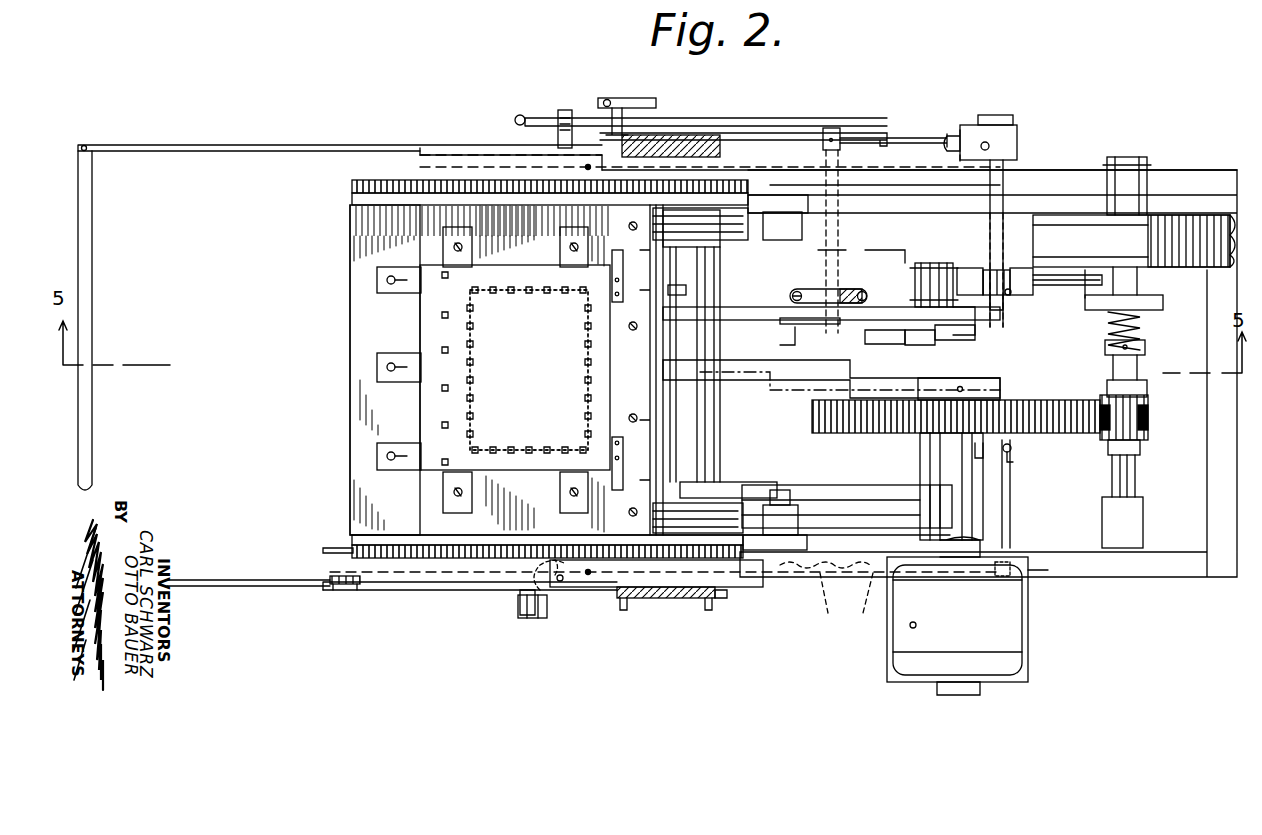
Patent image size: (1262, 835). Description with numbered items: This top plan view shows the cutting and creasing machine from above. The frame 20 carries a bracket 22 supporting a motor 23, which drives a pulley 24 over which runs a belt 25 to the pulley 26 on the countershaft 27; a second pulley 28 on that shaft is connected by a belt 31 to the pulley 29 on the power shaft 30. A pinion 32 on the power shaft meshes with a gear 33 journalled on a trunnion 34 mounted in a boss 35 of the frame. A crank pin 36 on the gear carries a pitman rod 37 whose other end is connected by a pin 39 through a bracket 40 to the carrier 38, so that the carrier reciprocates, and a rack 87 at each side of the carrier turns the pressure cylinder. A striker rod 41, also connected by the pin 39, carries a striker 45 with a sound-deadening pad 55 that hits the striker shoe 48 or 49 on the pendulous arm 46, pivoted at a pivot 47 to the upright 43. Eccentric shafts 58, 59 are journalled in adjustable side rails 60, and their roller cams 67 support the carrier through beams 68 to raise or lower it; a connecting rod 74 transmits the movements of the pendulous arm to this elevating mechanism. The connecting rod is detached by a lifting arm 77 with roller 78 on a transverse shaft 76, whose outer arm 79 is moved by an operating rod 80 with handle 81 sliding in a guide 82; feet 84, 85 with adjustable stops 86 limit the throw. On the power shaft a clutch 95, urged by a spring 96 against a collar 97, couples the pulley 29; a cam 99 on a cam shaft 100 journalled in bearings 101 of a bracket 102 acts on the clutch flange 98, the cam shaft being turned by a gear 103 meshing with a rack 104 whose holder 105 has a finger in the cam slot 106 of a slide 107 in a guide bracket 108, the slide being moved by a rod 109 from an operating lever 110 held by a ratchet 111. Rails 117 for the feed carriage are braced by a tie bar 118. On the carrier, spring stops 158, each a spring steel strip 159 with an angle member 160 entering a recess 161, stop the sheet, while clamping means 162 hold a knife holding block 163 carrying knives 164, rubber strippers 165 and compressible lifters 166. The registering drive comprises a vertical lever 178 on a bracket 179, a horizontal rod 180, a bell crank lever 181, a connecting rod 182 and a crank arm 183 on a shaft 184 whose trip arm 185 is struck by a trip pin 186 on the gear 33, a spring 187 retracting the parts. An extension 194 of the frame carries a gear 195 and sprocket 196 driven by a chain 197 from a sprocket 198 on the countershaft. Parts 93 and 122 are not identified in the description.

The frame 20 is at (1213, 574).
The bracket 22 is at (1040, 575).
The motor 23 is at (1010, 635).
The pulley 24 is at (945, 483).
The belt 25 is at (852, 490).
The pulley 26 is at (733, 484).
The countershaft 27 is at (712, 430).
The second pulley 28 is at (704, 244).
The pulley 29 is at (1170, 215).
The power shaft 30 is at (1135, 480).
The belt 31 is at (1190, 230).
The pinion 32 is at (1148, 418).
The gear 33 is at (1050, 402).
The trunnion or stub shaft 34 is at (990, 380).
The boss 35 is at (990, 530).
The crank pin 36 is at (871, 341).
The pitman rod 37 is at (782, 347).
The chase, table, member or carrier 38 is at (350, 258).
The pin 39 is at (686, 293).
The bracket 40 is at (652, 351).
The striker rod 41 is at (747, 320).
The upright or standard 43 is at (906, 263).
The striker 45 is at (976, 335).
The pendulous arm 46 is at (966, 279).
The pivot 47 is at (915, 277).
The striker shoe 48 is at (909, 346).
The striker shoe 49 is at (957, 340).
The pads 55 is at (665, 350).
The eccentric shaft 58 is at (670, 458).
The eccentric shaft 59 is at (785, 490).
The side rails 60 is at (783, 203).
The cams 67 is at (800, 228).
The beams 68 is at (658, 216).
The connecting rod 74 is at (740, 330).
The shaft 76 is at (838, 157).
The lifting arm 77 is at (782, 323).
The roller 78 is at (786, 350).
The arm 79 is at (852, 133).
The operating rod 80 is at (760, 118).
The handle 81 is at (515, 118).
The guide 82 is at (568, 110).
The foot 84 is at (803, 289).
The foot 85 is at (850, 289).
The adjustable stops 86 is at (793, 296).
The rack 87 is at (352, 184).
The base plate 93 is at (701, 138).
The clutch 95 is at (1215, 270).
The spring 96 is at (1140, 325).
The collar 97 is at (1145, 348).
The flange 98 is at (1163, 302).
The cam 99 is at (1090, 298).
The cam shaft 100 is at (1065, 285).
The bearings 101 is at (968, 268).
The bracket 102 is at (1020, 209).
The gear 103 is at (1013, 292).
The rack 104 is at (994, 306).
The extension or holder 105 is at (1007, 159).
The cam slot 106 is at (980, 143).
The slide 107 is at (1010, 132).
The guide bracket 108 is at (997, 118).
The rod 109 is at (912, 138).
The operating lever 110 is at (607, 98).
The hand operated ratchet 111 is at (617, 98).
The rails 117 is at (185, 146).
The tie bar 118 is at (92, 220).
The pivot 122 is at (588, 167).
The spring stops 158 is at (607, 276).
The strip 159 is at (623, 300).
The angle member 160 is at (622, 268).
The recess 161 is at (627, 240).
The clamping means 162 is at (377, 365).
The knife holding block 163 is at (420, 388).
The knives 164 is at (548, 290).
The strippers 165 is at (473, 384).
The compressible lifters 166 is at (445, 387).
The vertical lever 178 is at (528, 618).
The bracket 179 is at (518, 598).
The short horizontal rod 180 is at (498, 585).
The bell crank lever 181 is at (550, 590).
The connecting rod 182 is at (866, 606).
The crank arm 183 is at (1002, 580).
The shaft 184 is at (1010, 498).
The trip arm 185 is at (1011, 450).
The trip pin 186 is at (975, 446).
The spring 187 is at (825, 593).
The extension 194 is at (322, 546).
The gear 195 is at (328, 576).
The sprocket 196 is at (343, 588).
The chain 197 is at (403, 590).
The sprocket 198 is at (727, 595).